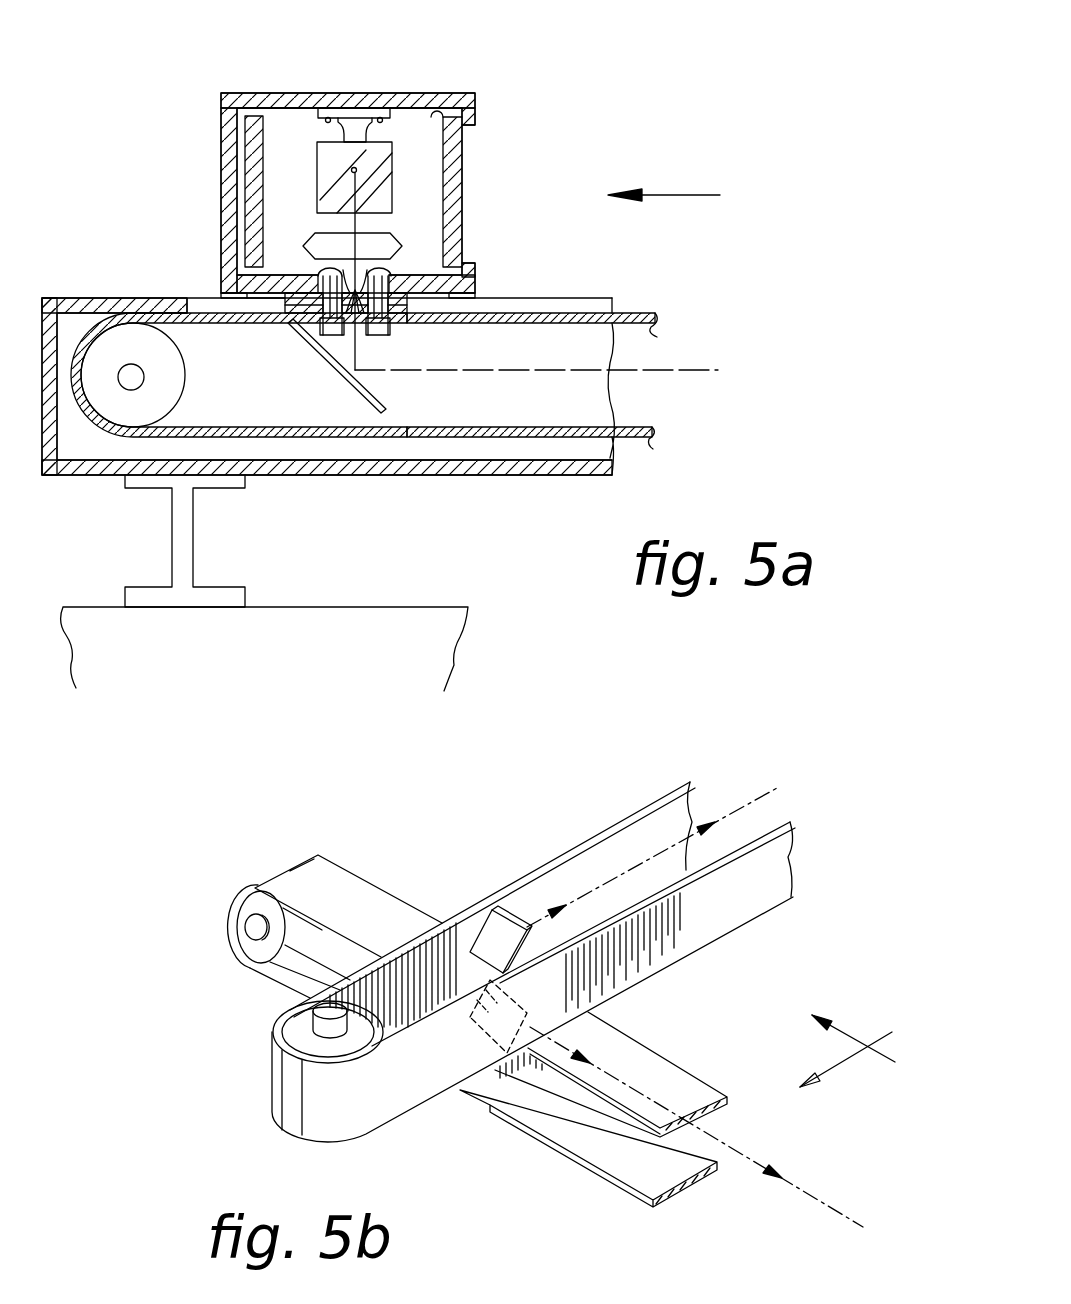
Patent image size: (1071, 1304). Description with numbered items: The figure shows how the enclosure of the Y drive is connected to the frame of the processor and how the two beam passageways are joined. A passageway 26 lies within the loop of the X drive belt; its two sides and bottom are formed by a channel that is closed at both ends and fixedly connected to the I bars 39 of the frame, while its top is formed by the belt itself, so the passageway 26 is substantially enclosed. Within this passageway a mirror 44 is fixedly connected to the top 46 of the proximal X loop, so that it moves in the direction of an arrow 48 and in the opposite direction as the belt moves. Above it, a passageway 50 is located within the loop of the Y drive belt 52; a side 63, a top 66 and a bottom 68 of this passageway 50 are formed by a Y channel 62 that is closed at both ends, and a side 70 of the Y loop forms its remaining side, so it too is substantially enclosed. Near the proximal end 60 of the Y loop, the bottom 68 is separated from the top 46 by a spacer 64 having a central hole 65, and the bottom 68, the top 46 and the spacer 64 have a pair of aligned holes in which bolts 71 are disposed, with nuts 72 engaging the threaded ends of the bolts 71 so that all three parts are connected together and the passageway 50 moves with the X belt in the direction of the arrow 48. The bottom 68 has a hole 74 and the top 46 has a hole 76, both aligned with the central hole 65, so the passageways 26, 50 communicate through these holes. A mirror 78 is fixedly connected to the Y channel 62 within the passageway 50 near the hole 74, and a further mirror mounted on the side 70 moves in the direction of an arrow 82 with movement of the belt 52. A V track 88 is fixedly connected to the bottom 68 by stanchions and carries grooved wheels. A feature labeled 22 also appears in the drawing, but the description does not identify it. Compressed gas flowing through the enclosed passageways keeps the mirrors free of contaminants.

In FIG. 5a, the strip 22 is at (557, 372).
In FIG. 5b, the strip 22 is at (838, 1213).
In FIG. 5a, the passageway 26 is at (695, 421).
In FIG. 5a, the I bars 39 is at (195, 545).
In FIG. 5a, the mirror 44 is at (344, 384).
In FIG. 5b, the mirror 44 is at (505, 1078).
In FIG. 5a, the top of the proximal X loop 46 is at (518, 324).
In FIG. 5a, the arrow 48 is at (708, 170).
In FIG. 5b, the arrow 48 is at (847, 1033).
In FIG. 5a, the passageway 50 is at (306, 202).
In FIG. 5b, the Y drive belt 52 is at (728, 927).
In FIG. 5b, the proximal end of the Y loop 60 is at (278, 1088).
In FIG. 5a, the Y channel 62 is at (245, 88).
In FIG. 5a, the side 63 is at (221, 153).
In FIG. 5a, the spacer 64 is at (297, 314).
In FIG. 5a, the central hole 65 is at (395, 293).
In FIG. 5a, the top 66 is at (345, 93).
In FIG. 5a, the bottom 68 is at (243, 294).
In FIG. 5a, the side of the Y loop 70 is at (434, 110).
In FIG. 5a, the bolts 71 is at (410, 300).
In FIG. 5a, the nuts 72 is at (390, 337).
In FIG. 5a, the hole 74 is at (388, 268).
In FIG. 5a, the hole 76 is at (326, 268).
In FIG. 5a, the mirror 78 is at (393, 173).
In FIG. 5b, the mirror 78 is at (500, 927).
In FIG. 5b, the arrow 82 is at (842, 1063).
In FIG. 5a, the V track 88 is at (390, 234).